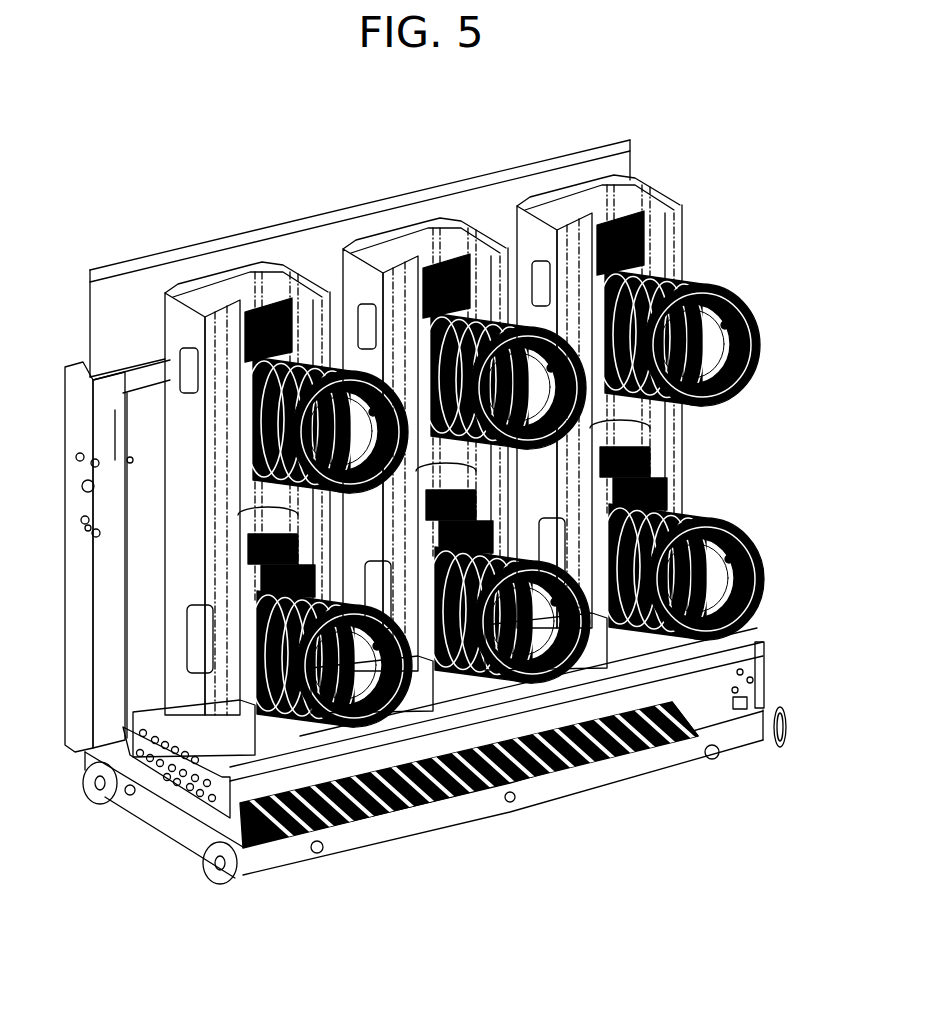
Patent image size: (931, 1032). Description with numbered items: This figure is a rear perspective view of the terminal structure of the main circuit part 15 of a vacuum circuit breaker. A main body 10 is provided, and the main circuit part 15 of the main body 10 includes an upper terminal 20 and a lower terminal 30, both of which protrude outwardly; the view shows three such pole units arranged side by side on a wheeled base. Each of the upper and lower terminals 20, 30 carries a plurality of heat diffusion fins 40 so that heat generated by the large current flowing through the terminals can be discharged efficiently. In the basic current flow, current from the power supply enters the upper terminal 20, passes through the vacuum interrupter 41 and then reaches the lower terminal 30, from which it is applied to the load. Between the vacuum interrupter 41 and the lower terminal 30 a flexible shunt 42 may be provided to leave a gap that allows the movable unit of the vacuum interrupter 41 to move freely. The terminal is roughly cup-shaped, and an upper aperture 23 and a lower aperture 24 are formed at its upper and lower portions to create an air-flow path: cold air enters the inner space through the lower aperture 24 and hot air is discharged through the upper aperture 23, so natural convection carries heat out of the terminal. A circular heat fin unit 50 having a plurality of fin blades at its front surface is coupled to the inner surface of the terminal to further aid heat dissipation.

The main body 10 is at (120, 272).
The main circuit part 15 is at (636, 373).
The heat diffusion fins 40 is at (690, 218).
The upper aperture 23 is at (720, 402).
The upper terminal 20 is at (702, 325).
The circular heat fin unit 50 is at (731, 342).
The lower aperture 24 is at (726, 345).
The vacuum interrupter 41 is at (697, 436).
The flexible shunt 42 is at (698, 468).
The lower terminal 30 is at (694, 553).